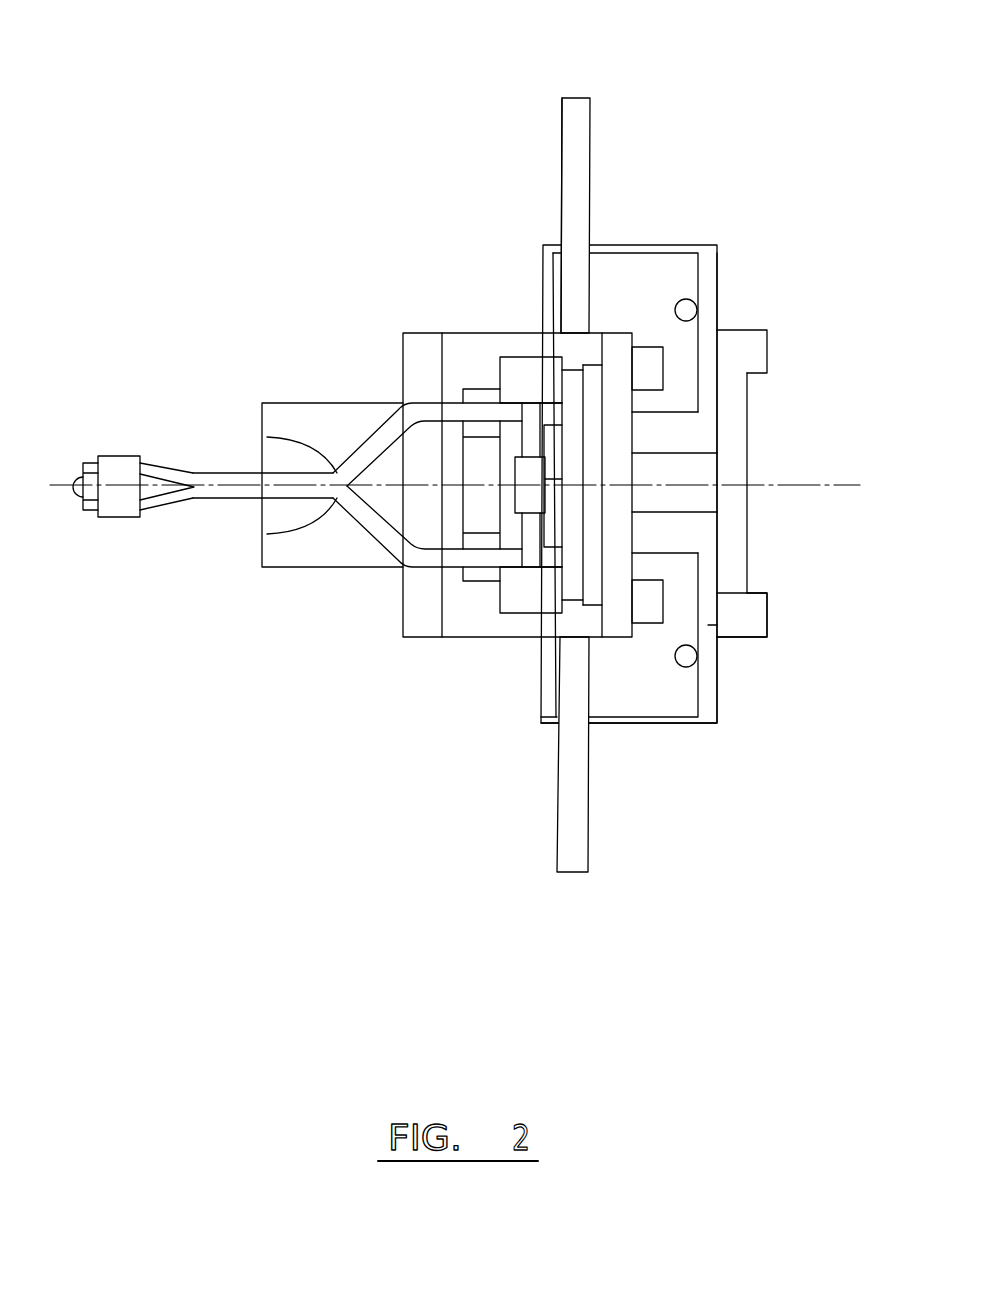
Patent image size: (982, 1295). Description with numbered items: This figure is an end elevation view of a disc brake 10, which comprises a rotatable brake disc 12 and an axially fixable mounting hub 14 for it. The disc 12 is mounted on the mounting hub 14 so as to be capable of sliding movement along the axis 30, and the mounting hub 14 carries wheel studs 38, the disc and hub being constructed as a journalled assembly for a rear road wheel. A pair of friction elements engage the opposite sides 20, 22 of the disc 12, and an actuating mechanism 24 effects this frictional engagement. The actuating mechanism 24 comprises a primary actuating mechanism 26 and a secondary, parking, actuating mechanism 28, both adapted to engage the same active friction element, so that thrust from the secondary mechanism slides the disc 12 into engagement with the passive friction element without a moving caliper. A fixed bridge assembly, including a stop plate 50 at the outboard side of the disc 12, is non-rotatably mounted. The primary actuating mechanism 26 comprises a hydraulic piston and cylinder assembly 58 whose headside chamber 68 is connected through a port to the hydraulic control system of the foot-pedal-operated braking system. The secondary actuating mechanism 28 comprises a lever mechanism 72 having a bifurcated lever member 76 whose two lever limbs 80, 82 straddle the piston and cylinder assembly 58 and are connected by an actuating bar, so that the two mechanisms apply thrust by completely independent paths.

The disc brake 10 is at (257, 669).
The brake disc 12 is at (580, 117).
The mounting hub 14 is at (717, 725).
The side of disc 20 is at (562, 183).
The side of disc 22 is at (592, 210).
The actuating mechanism 24 is at (298, 403).
The primary actuating mechanism 26 is at (240, 557).
The secondary actuating mechanism 28 is at (282, 472).
The axis 30 is at (782, 485).
The wheel studs 38 is at (750, 622).
The stop plate 50 is at (403, 617).
The hydraulic piston and cylinder assembly 58 is at (417, 640).
The headside chamber 68 is at (748, 487).
The lever mechanism 72 is at (350, 518).
The bifurcated lever member 76 is at (235, 492).
The lever limb 80 is at (378, 440).
The lever limb 82 is at (380, 533).